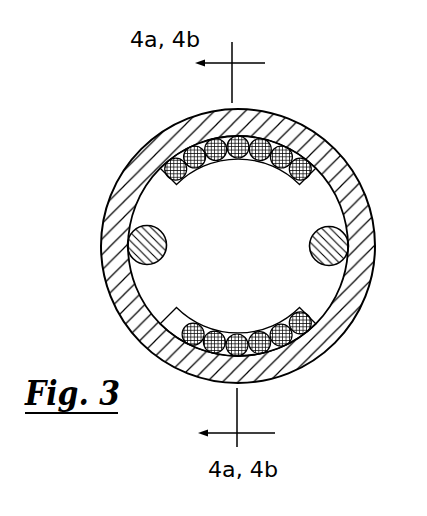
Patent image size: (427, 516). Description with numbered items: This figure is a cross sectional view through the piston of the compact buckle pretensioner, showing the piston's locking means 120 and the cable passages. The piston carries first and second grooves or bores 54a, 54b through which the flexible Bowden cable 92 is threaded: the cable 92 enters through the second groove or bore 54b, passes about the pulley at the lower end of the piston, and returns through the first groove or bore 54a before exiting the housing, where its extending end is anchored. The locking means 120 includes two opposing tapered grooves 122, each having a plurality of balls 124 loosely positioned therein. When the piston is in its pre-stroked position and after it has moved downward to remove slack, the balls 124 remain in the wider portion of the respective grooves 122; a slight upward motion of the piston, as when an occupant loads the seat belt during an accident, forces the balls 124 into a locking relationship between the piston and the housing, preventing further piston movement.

The first groove or bore 54a is at (347, 164).
The second groove or bore 54b is at (150, 218).
The Bowden cable 92 is at (153, 243).
The locking means 120 is at (238, 246).
The tapered groove 122 is at (281, 153).
The ball 124 is at (273, 172).